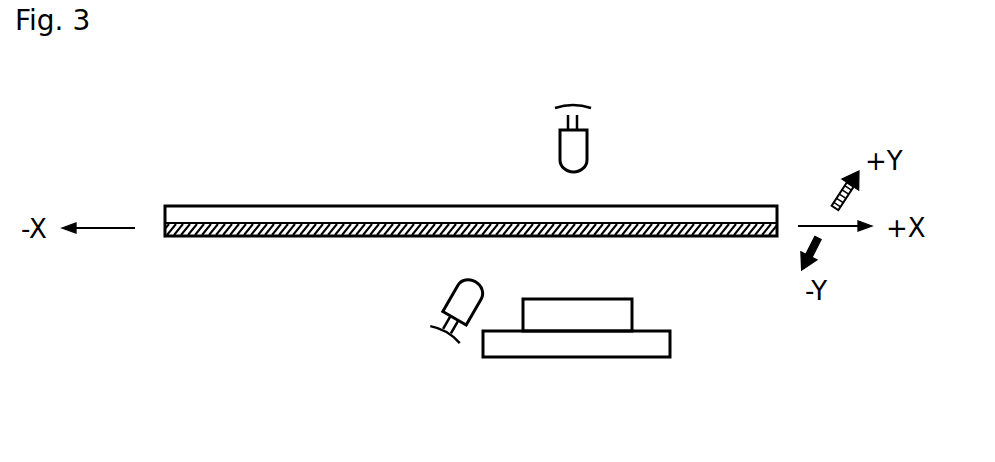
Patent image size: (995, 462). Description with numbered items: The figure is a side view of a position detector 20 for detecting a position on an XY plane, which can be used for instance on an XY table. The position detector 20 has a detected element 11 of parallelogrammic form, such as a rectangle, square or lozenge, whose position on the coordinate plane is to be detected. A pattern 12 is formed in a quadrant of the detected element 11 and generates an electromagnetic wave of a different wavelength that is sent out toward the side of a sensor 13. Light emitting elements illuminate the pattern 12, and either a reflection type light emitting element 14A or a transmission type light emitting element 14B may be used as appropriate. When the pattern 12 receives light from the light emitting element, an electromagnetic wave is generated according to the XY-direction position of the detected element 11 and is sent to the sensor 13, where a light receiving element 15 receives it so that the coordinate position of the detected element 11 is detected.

The position detector 20 is at (224, 125).
The detected element 11 is at (690, 206).
The pattern 12 is at (297, 237).
The sensor 13 is at (690, 333).
The light emitting element 14A is at (450, 300).
The light emitting element 14B is at (588, 146).
The light receiving element 15 is at (578, 299).